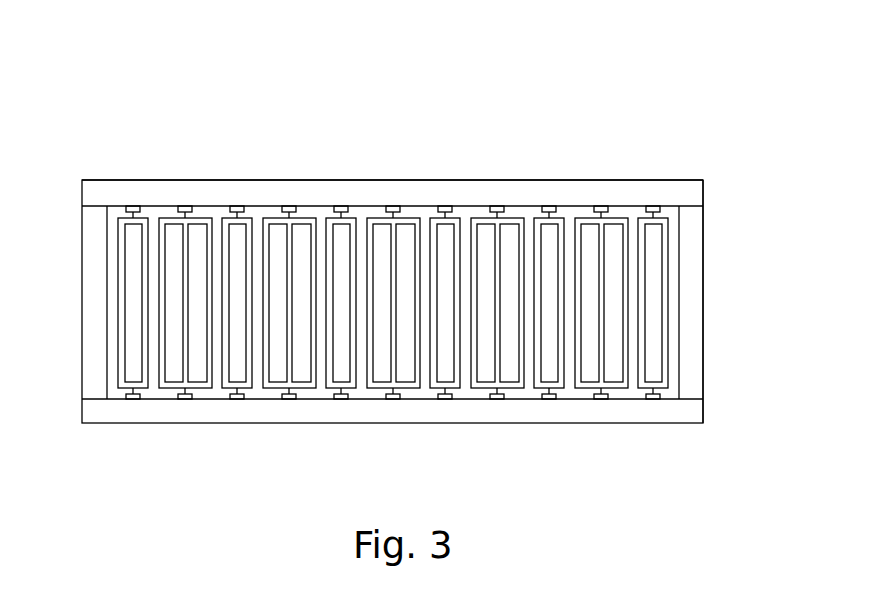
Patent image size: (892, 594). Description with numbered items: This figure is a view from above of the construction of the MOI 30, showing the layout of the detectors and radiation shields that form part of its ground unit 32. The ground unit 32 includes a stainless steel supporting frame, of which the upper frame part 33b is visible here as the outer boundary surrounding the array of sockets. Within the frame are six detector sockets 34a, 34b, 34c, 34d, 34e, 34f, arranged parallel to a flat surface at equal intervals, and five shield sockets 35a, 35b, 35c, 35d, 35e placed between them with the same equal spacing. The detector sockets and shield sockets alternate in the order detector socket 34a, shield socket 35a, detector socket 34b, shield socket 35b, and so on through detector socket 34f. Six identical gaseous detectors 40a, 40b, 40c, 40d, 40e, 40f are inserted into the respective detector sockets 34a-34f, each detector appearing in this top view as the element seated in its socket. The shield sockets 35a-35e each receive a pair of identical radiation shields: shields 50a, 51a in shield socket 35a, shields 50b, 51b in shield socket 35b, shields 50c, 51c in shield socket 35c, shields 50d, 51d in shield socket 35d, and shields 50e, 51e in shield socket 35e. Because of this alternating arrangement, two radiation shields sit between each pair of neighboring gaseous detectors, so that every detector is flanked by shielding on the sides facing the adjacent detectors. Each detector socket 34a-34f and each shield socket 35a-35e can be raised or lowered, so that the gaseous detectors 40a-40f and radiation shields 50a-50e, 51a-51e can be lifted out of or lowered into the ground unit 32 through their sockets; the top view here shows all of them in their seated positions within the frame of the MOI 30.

The MOI 30 is at (240, 82).
The ground unit 32 is at (668, 180).
The upper frame part 33b is at (705, 255).
The detector socket 34a is at (121, 214).
The detector socket 34b is at (225, 214).
The detector socket 34c is at (329, 214).
The detector socket 34d is at (433, 214).
The detector socket 34e is at (537, 214).
The detector socket 34f is at (643, 214).
The shield socket 35a is at (168, 214).
The shield socket 35b is at (272, 214).
The shield socket 35c is at (376, 214).
The shield socket 35d is at (480, 214).
The shield socket 35e is at (584, 214).
The gaseous detector 40a is at (131, 365).
The gaseous detector 40b is at (235, 365).
The gaseous detector 40c is at (339, 365).
The gaseous detector 40d is at (443, 365).
The gaseous detector 40e is at (547, 365).
The gaseous detector 40f is at (651, 365).
The radiation shield 50a is at (171, 365).
The radiation shield 50b is at (275, 365).
The radiation shield 50c is at (379, 365).
The radiation shield 50d is at (483, 365).
The radiation shield 50e is at (587, 365).
The radiation shield 51a is at (197, 368).
The radiation shield 51b is at (301, 368).
The radiation shield 51c is at (405, 368).
The radiation shield 51d is at (509, 368).
The radiation shield 51e is at (613, 368).